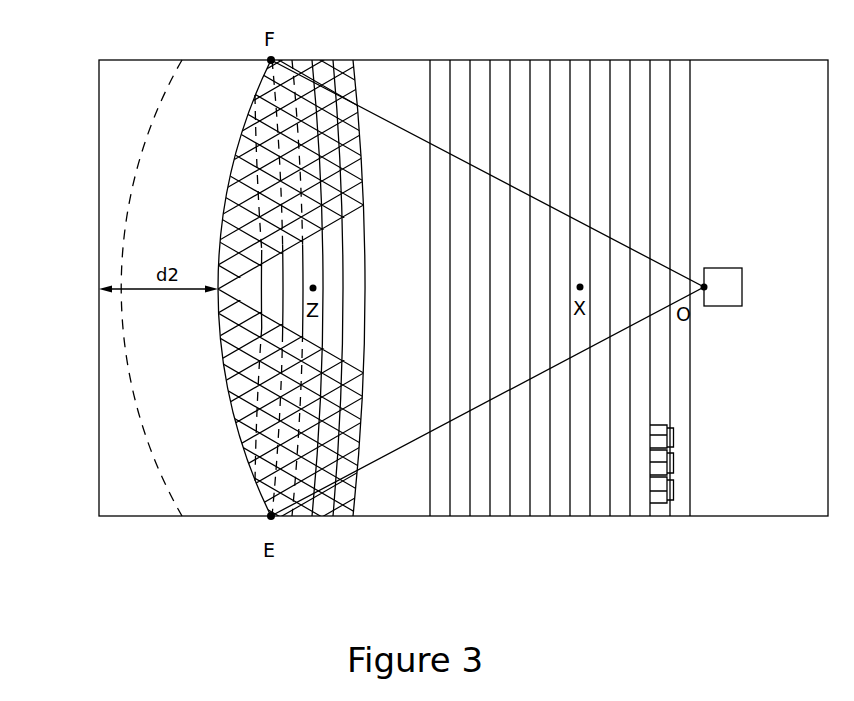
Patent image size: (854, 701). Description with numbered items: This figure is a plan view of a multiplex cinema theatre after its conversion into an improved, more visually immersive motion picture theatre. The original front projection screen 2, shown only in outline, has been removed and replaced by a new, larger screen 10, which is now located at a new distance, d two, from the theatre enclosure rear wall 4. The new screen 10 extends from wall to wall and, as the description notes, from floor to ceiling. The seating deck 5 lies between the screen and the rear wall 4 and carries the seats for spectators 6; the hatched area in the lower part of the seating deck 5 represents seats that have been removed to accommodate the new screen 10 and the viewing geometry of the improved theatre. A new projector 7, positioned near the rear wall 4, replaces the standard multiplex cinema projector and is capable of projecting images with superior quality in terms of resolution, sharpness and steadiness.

The front projection screen 2 is at (133, 382).
The theatre enclosure rear wall 4 is at (99, 218).
The seating deck 5 is at (597, 507).
The seats for spectators 6 is at (674, 429).
The new projector 7 is at (713, 268).
The new larger screen 10 is at (233, 422).